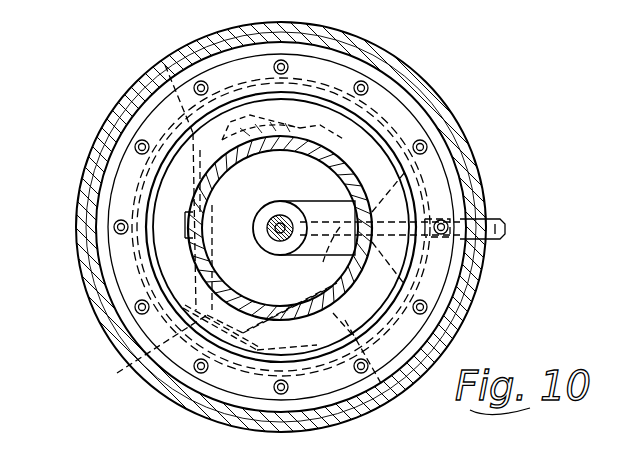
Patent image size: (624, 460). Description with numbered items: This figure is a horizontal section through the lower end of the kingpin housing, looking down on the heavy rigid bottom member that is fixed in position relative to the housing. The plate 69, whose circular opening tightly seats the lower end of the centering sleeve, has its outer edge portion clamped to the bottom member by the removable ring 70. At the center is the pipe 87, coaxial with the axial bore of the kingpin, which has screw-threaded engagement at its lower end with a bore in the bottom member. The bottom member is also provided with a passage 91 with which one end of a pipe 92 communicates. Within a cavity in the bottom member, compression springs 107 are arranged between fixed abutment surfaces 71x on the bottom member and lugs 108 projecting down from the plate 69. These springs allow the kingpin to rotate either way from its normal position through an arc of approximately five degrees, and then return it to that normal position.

The removable ring 70 is at (430, 285).
The fixed abutment surfaces 71x is at (165, 65).
The lugs 108 is at (180, 222).
The compression springs 107 is at (283, 122).
The pipe 87 is at (274, 233).
The passage 91 is at (325, 265).
The pipe 92 is at (500, 222).
The plate 69 is at (317, 345).